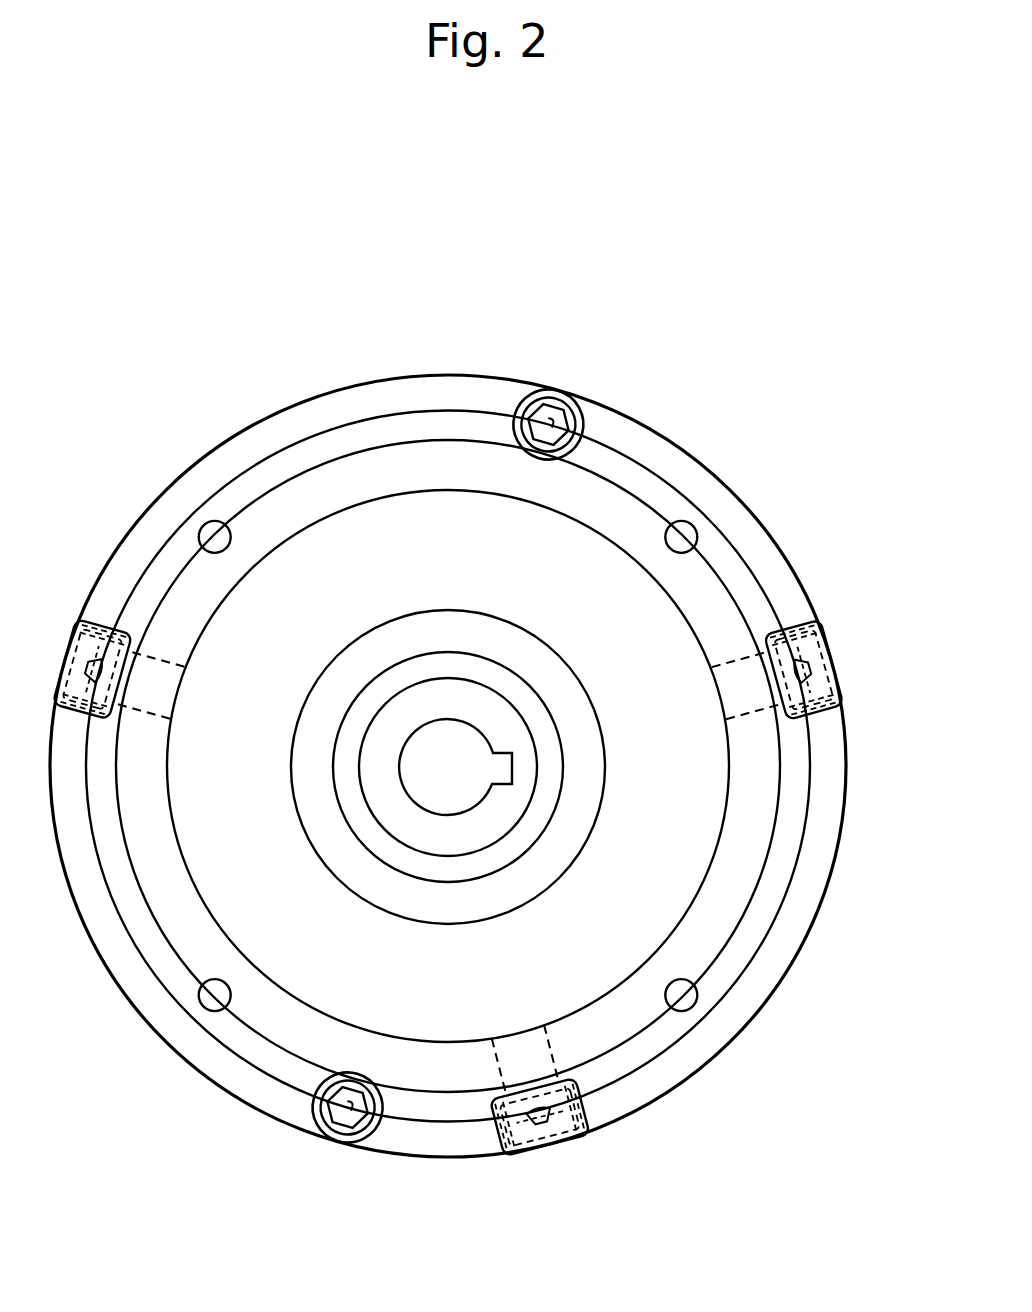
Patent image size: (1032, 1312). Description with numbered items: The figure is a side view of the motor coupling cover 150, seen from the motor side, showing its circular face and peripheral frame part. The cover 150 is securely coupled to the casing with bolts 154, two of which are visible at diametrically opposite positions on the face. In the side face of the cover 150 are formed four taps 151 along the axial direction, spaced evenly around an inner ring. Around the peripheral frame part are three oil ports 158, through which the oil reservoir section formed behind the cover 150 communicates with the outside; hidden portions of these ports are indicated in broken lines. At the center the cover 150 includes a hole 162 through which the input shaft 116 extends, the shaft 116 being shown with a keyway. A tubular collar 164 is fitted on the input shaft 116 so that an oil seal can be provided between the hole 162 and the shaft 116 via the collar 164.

The motor coupling cover 150 is at (680, 468).
The taps 151 is at (224, 984).
The bolts 154 is at (553, 415).
The oil ports 158 is at (140, 680).
The hole 162 is at (602, 798).
The tubular collar 164 is at (552, 755).
The input shaft 116 is at (502, 805).